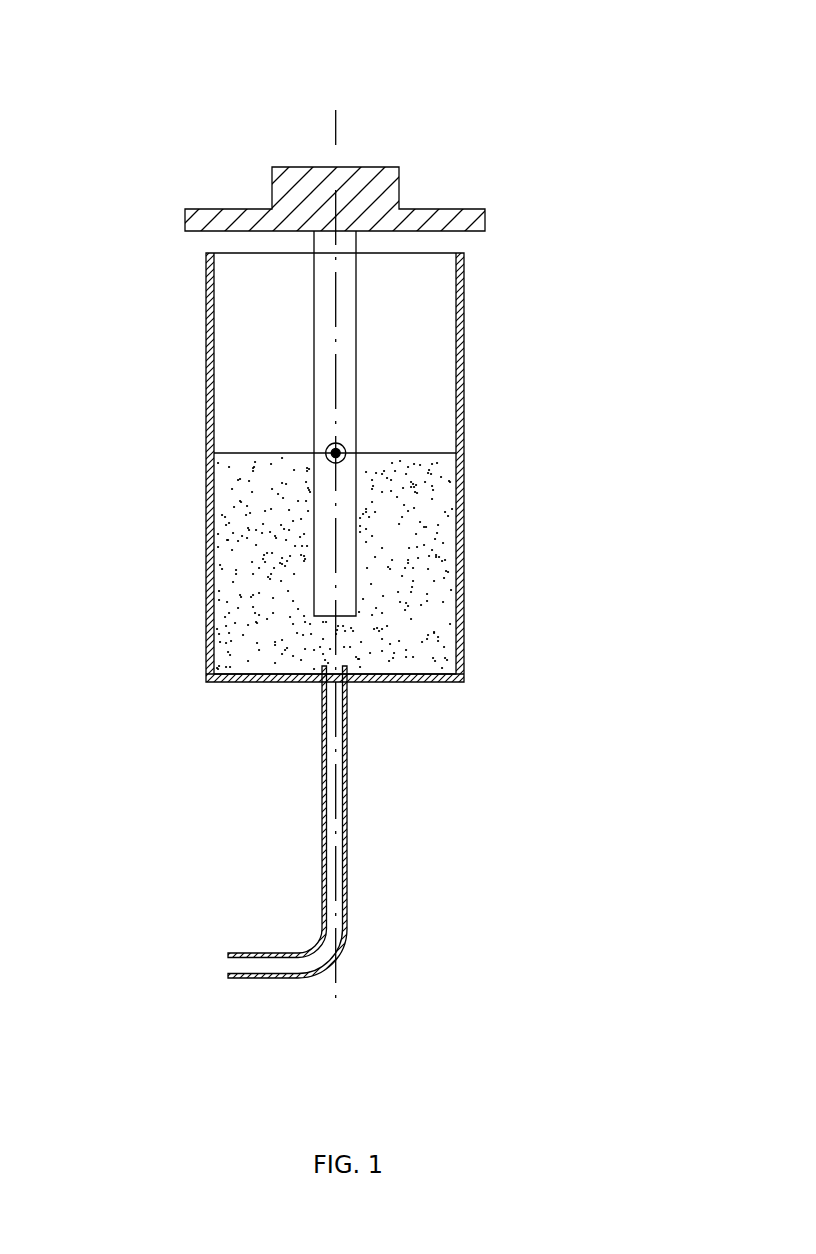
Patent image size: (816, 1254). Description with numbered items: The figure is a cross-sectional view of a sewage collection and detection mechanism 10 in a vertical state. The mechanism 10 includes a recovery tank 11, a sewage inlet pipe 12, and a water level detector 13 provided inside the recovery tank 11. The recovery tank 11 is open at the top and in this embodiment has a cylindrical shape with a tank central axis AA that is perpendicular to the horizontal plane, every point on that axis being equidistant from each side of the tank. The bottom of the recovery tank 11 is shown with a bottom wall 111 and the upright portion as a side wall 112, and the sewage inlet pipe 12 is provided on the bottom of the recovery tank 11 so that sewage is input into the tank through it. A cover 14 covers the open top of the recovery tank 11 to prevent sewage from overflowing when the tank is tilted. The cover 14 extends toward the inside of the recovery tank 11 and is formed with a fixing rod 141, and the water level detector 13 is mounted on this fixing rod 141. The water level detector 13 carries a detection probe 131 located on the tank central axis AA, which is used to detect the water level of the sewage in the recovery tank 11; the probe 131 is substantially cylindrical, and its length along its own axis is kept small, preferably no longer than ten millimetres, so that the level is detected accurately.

The sewage collection and detection mechanism 10 is at (361, 21).
The recovery tank 11 is at (464, 560).
The bottom wall of container 111 is at (232, 676).
The side wall of container 112 is at (207, 253).
The sewage inlet pipe 12 is at (347, 840).
The water level detector 13 is at (341, 446).
The detection probe 131 is at (345, 450).
The cover 14 is at (373, 175).
The fixing rod 141 is at (356, 337).